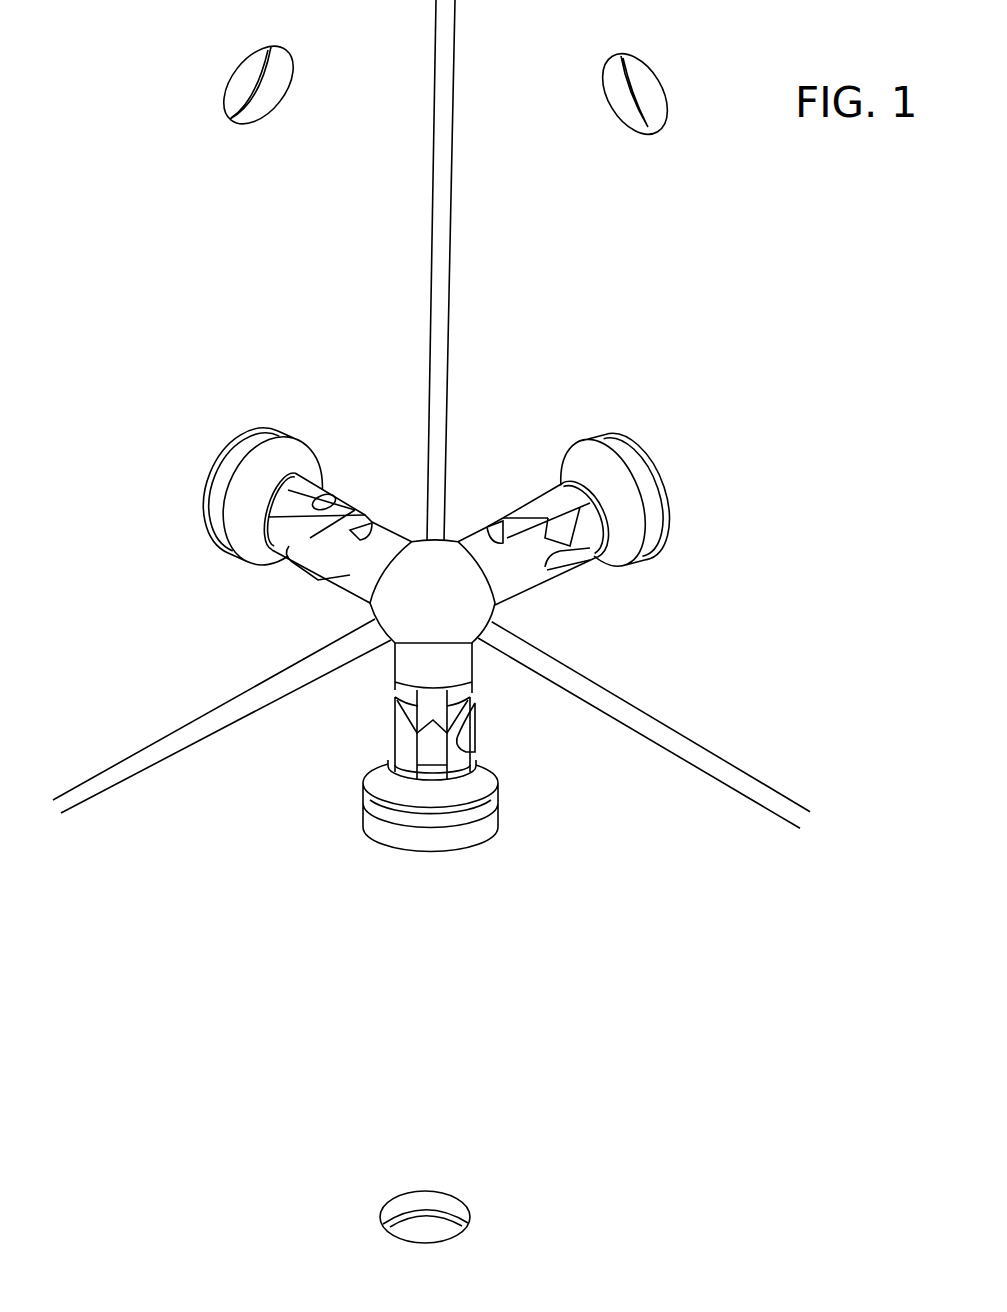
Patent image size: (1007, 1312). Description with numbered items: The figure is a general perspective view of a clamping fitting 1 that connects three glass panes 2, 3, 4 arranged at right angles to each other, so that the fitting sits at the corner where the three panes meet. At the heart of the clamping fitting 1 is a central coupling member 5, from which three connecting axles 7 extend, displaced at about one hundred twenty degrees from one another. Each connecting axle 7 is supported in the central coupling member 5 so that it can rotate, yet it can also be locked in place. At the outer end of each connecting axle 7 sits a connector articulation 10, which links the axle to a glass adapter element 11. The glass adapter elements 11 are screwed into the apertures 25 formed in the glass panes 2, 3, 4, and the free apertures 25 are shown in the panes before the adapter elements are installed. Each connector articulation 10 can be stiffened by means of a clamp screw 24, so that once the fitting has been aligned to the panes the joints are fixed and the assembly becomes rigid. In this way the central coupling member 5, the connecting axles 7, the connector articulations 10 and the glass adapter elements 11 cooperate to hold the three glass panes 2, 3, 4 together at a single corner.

The clamping fitting 1 is at (268, 646).
The glass pane 2 is at (138, 301).
The glass pane 3 is at (672, 327).
The glass pane 4 is at (440, 1034).
The central coupling member 5 is at (439, 607).
The connecting axle 7 is at (433, 670).
The connector articulation 10 is at (347, 512).
The glass adapter element 11 is at (238, 461).
The clamp screw 24 is at (298, 553).
The aperture 25 is at (245, 118).